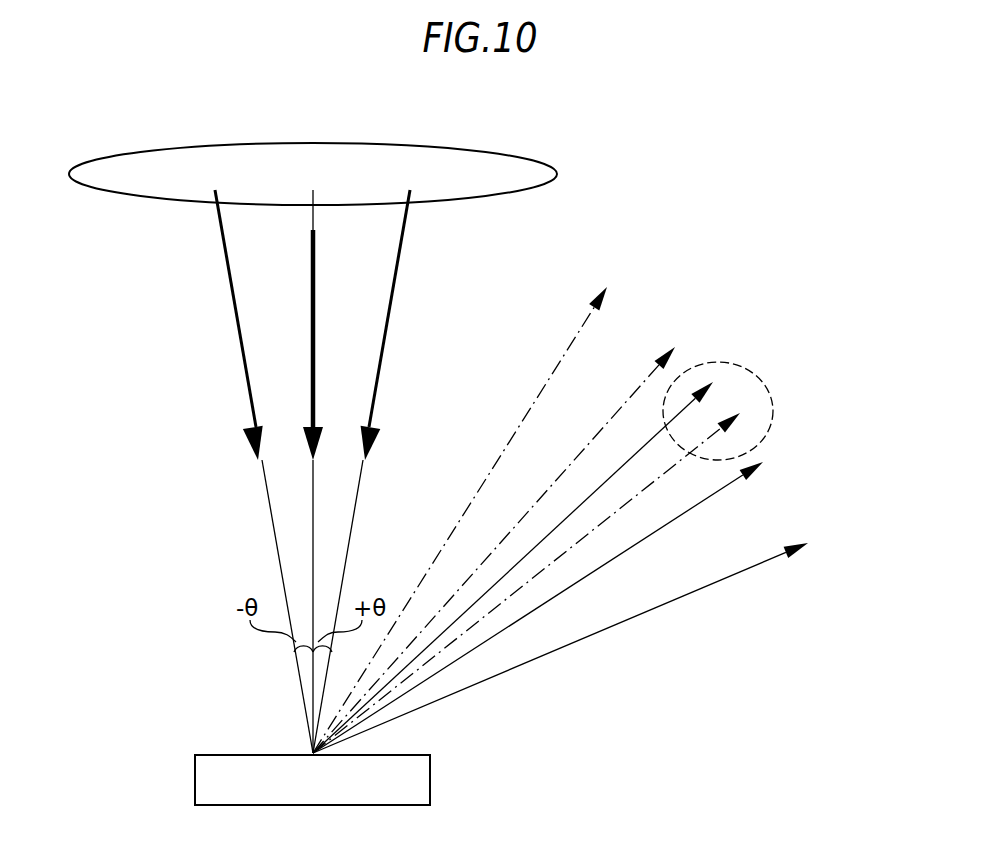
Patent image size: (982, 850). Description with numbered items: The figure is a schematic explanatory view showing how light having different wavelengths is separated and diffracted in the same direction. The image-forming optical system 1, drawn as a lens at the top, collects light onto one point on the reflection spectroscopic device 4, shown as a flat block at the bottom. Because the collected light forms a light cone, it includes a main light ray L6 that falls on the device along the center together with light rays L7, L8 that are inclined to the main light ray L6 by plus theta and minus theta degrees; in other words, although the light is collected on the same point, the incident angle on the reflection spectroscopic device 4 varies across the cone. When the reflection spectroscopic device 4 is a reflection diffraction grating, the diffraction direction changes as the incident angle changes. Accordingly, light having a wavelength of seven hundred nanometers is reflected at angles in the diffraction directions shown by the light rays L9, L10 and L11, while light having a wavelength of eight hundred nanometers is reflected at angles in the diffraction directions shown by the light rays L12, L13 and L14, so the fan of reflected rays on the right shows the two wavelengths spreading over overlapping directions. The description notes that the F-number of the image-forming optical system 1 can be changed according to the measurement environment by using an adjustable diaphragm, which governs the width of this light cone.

The image-forming optical system 1 is at (543, 113).
The reflection spectroscopic device 4 is at (430, 778).
The main light ray L6 is at (316, 263).
The light ray L7 is at (393, 304).
The light ray L8 is at (226, 265).
The light ray L9 is at (579, 330).
The light ray L10 is at (646, 380).
The light ray L11 is at (737, 417).
The light ray L12 is at (565, 522).
The light ray L13 is at (658, 530).
The light ray L14 is at (745, 573).